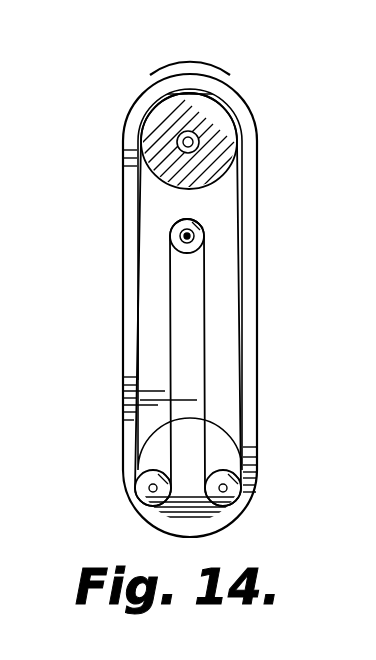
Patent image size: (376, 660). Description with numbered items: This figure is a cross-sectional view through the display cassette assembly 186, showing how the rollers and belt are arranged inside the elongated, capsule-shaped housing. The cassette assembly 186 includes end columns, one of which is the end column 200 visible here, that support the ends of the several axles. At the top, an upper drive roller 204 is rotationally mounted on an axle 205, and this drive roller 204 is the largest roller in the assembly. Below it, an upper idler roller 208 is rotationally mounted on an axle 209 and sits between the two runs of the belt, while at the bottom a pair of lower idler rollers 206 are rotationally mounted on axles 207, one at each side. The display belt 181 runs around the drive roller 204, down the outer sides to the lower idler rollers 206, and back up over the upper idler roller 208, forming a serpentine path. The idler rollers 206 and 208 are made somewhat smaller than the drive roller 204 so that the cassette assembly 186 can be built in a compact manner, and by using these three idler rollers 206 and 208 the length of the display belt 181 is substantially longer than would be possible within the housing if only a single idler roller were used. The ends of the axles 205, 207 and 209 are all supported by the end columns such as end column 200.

The end column 200 is at (190, 75).
The upper drive roller 204 is at (233, 135).
The axle 205 is at (177, 138).
The display cassette assembly 186 is at (110, 178).
The display belt 181 is at (137, 336).
The upper idler roller 208 is at (205, 236).
The axle 209 is at (180, 236).
The lower idler rollers 206 is at (140, 473).
The axles 207 is at (152, 488).